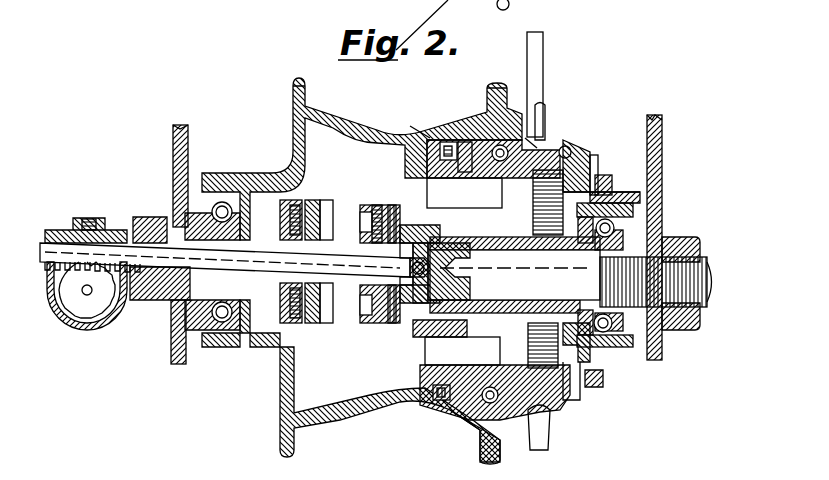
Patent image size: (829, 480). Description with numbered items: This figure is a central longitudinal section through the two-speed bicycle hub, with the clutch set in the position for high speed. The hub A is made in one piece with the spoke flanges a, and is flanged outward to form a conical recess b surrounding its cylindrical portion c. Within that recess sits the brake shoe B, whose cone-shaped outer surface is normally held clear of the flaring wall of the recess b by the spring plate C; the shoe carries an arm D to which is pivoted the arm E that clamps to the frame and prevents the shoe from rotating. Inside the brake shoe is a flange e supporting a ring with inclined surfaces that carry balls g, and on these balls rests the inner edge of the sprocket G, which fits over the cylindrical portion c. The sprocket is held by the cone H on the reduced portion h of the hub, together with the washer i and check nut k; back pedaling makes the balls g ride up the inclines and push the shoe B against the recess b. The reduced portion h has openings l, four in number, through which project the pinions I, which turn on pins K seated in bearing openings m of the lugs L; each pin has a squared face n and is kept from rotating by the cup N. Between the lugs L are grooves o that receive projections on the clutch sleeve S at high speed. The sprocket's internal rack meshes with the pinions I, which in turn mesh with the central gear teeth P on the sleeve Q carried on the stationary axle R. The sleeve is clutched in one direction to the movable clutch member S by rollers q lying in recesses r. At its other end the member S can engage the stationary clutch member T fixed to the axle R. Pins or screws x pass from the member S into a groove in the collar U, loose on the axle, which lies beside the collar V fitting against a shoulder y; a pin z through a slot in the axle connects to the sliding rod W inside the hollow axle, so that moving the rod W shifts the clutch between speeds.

The hub A is at (337, 113).
The flanges a is at (497, 95).
The brake shoe B is at (535, 135).
The spring plate C is at (414, 123).
The cylindrical portion c is at (444, 140).
The arm D is at (545, 50).
The arm E is at (470, 135).
The conical recess b is at (433, 398).
The sprocket G is at (565, 150).
The balls g is at (548, 140).
The cone H is at (585, 175).
The reduced portion h is at (612, 190).
The washer i is at (598, 175).
The check nut k is at (608, 168).
The pinions I is at (625, 400).
The bearing opening m is at (660, 372).
The lugs L is at (640, 375).
The openings l is at (500, 188).
The pins K is at (570, 395).
The cup N is at (640, 346).
The squared face n is at (568, 400).
The grooves o is at (538, 445).
The flange e is at (445, 412).
The teeth P is at (515, 275).
The recesses r is at (470, 300).
The stationary axle R is at (708, 292).
The movable clutch member S is at (420, 195).
The stationary clutch member T is at (312, 330).
The collar U is at (365, 215).
The pins or screws x is at (380, 205).
The rollers q is at (396, 323).
The pin z is at (410, 268).
The collar V is at (400, 285).
The sleeve Q is at (400, 323).
The sliding bar or rod W is at (160, 295).
The shoulder y is at (205, 340).